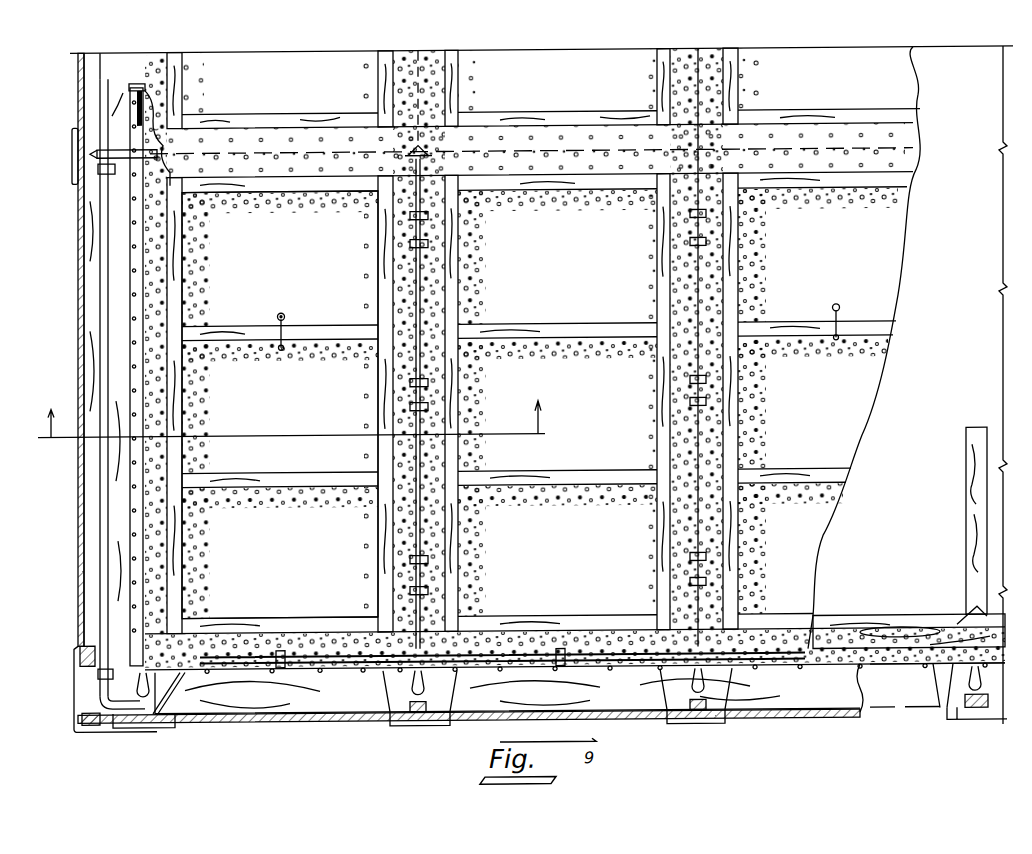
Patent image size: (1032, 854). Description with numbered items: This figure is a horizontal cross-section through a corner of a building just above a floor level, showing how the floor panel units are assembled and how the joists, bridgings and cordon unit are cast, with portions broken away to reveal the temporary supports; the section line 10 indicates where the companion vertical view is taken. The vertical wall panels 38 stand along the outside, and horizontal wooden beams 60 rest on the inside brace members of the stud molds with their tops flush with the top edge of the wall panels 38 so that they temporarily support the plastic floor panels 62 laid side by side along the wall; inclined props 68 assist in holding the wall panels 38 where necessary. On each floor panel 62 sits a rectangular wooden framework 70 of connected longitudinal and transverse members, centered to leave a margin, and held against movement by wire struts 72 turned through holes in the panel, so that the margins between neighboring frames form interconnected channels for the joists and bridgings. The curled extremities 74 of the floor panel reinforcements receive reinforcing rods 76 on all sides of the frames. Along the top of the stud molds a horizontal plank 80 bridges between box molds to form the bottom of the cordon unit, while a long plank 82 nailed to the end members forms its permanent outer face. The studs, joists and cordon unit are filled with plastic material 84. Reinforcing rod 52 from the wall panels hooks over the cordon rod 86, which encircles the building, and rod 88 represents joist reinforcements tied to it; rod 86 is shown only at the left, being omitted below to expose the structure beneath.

The section line 10 is at (296, 418).
The vertical wall panel 38 is at (130, 307).
The reinforcing rod 52 is at (700, 692).
The horizontal wooden beam 60 is at (898, 630).
The floor panel 62 is at (848, 418).
The inclined prop 68 is at (966, 513).
The rectangular wooden framework 70 is at (357, 341).
The wire strut 72 is at (288, 333).
The curled extremity of rod reinforcement 74 is at (430, 247).
The reinforcing rod 76 is at (147, 545).
The horizontal plank 80 is at (85, 357).
The long horizontal plank 82 is at (78, 530).
The plastic material 84 is at (505, 137).
The reinforcing rod 86 is at (100, 98).
The rod 88 is at (200, 112).